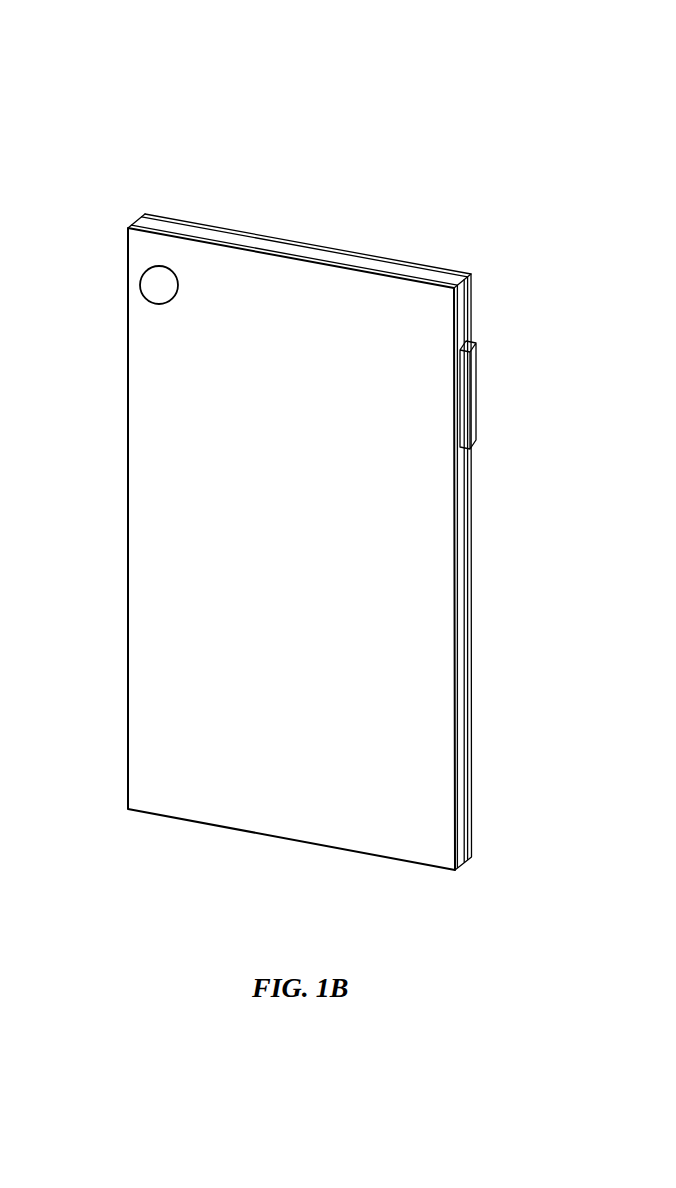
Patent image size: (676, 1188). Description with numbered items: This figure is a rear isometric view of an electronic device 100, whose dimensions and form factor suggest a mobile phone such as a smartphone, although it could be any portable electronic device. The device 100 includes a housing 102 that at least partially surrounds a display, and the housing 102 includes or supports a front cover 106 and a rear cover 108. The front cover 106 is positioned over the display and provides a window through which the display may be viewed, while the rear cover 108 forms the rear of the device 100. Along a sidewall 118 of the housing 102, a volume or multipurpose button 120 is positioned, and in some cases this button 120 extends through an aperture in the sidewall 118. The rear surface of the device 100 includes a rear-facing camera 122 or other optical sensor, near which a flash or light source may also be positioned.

The electronic device 100 is at (107, 87).
The housing 102 is at (476, 564).
The front cover 106 is at (472, 601).
The rear cover 108 is at (457, 637).
The sidewall 118 is at (458, 667).
The multipurpose button 120 is at (477, 390).
The rear-facing camera 122 is at (140, 285).